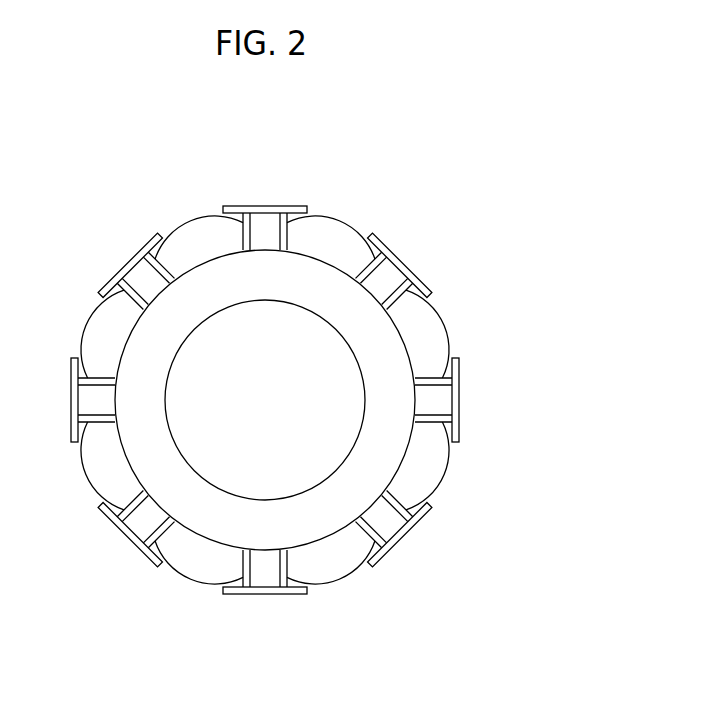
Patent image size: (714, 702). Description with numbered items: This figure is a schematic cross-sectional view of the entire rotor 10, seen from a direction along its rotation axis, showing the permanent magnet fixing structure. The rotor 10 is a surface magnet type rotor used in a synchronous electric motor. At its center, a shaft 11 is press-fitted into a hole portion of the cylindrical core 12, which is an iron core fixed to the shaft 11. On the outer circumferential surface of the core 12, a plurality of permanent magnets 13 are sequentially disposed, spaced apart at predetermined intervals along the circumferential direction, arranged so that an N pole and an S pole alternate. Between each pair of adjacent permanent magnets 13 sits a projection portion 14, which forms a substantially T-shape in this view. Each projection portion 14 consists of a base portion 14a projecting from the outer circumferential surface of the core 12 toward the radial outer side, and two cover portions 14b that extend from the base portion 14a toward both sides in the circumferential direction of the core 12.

The rotor 10 is at (523, 283).
The shaft 11 is at (233, 409).
The core 12 is at (211, 511).
The permanent magnet 13 is at (198, 576).
The projection portion 14 is at (202, 137).
The base portion 14a is at (262, 232).
The cover portion 14b is at (233, 208).